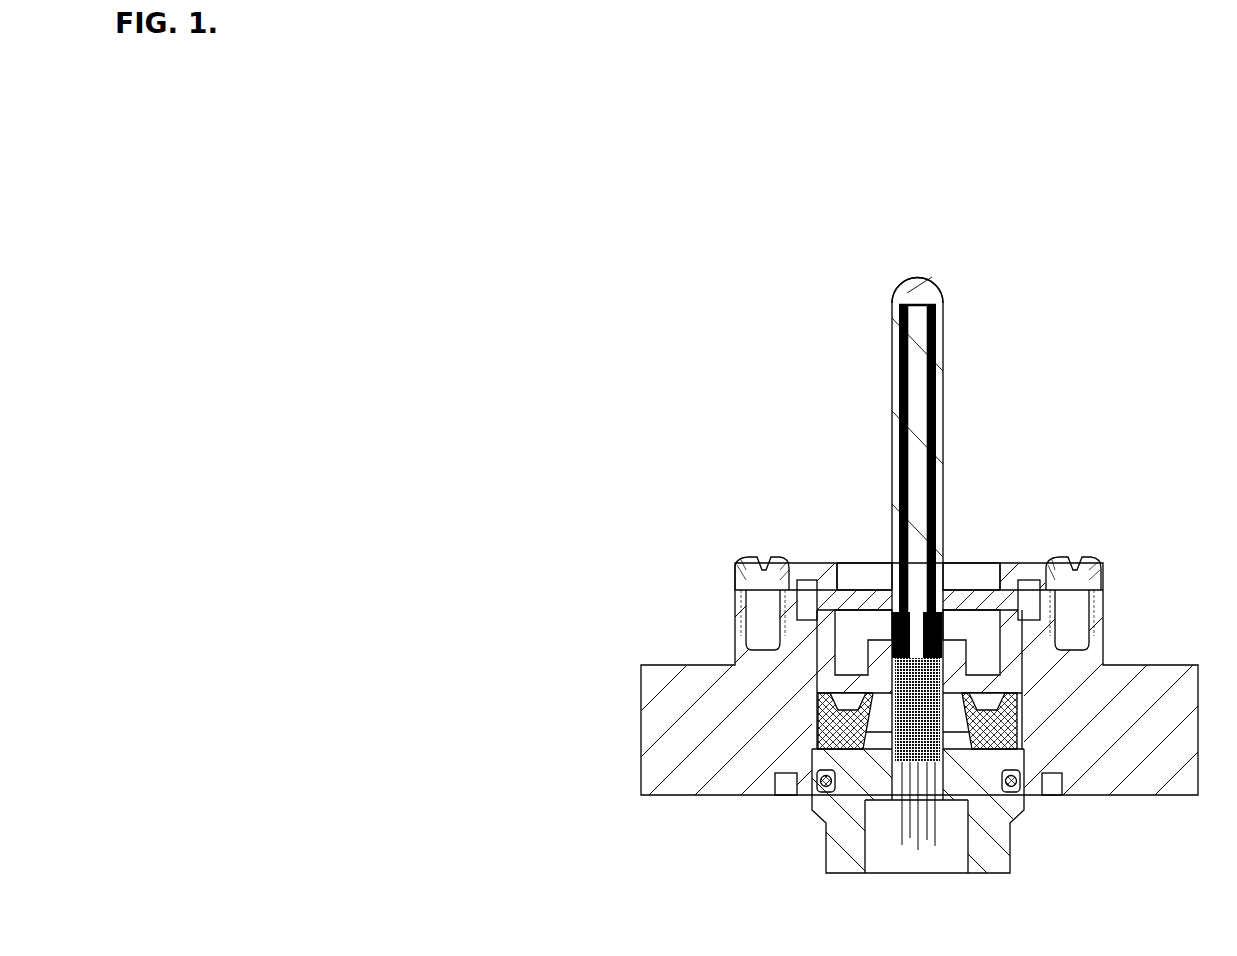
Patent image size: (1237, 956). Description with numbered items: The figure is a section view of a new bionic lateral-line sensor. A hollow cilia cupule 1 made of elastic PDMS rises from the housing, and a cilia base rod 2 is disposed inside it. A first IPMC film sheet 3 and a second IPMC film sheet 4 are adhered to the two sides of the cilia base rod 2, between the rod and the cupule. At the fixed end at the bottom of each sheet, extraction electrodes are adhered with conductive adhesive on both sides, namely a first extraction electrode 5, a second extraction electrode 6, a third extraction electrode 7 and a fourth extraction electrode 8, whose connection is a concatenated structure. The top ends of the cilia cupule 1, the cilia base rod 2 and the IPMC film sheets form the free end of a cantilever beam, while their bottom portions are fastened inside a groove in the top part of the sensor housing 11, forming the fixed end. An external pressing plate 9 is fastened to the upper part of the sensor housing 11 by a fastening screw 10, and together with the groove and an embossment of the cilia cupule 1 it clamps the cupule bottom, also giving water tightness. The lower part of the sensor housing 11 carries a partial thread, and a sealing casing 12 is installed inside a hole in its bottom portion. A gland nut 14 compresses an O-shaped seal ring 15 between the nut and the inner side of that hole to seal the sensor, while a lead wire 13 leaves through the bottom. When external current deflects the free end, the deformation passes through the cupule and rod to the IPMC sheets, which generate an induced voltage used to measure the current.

The cilia cupule 1 is at (908, 288).
The cilia base rod 2 is at (913, 400).
The first IPMC film sheet 3 is at (907, 435).
The second IPMC film sheet 4 is at (925, 492).
The first extraction electrode 5 is at (891, 618).
The second extraction electrode 6 is at (912, 614).
The third extraction electrode 7 is at (932, 616).
The fourth extraction electrode 8 is at (952, 618).
The external pressing plate 9 is at (1012, 577).
The fastening screw 10 is at (1068, 603).
The sensor housing 11 is at (1102, 675).
The sealing casing 12 is at (1045, 777).
The lead wire 13 is at (930, 850).
The gland nut 14 is at (833, 822).
The O-shaped seal ring 15 is at (805, 785).